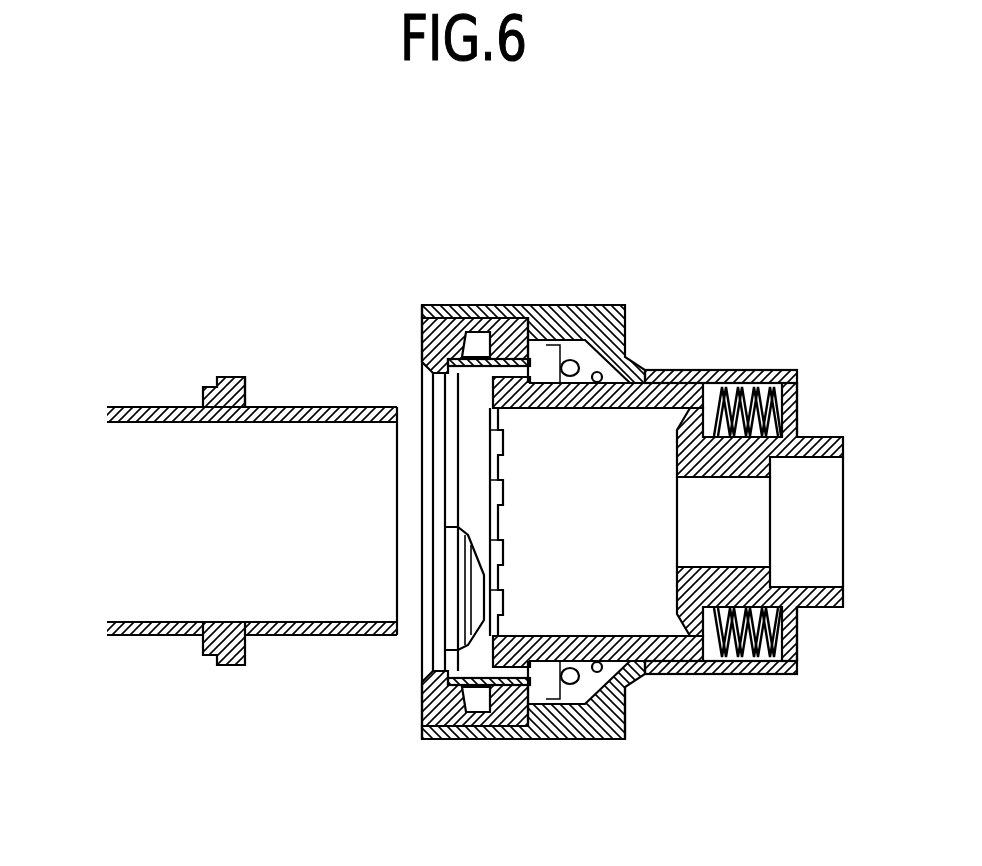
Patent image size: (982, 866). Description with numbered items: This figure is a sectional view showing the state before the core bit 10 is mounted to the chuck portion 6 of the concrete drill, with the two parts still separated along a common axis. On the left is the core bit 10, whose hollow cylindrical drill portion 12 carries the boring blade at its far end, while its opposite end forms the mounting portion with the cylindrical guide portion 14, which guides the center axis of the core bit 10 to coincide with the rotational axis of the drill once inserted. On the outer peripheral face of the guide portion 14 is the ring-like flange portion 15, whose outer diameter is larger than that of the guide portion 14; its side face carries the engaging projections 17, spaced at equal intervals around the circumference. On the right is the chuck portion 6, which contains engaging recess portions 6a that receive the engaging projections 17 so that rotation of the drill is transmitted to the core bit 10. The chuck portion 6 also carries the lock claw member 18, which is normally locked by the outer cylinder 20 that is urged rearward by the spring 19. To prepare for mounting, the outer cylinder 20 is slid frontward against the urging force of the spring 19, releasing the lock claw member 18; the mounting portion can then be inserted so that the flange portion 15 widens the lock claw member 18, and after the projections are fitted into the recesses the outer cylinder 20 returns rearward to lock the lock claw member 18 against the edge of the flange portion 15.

The core bit 10 is at (229, 483).
The drill portion 12 is at (157, 635).
The guide portion 14 is at (328, 635).
The flange portion 15 is at (227, 377).
The engaging projection 17 is at (247, 390).
The chuck portion 6 is at (625, 510).
The engaging recess portion 6a is at (568, 740).
The lock claw member 18 is at (477, 357).
The spring 19 is at (745, 372).
The outer cylinder 20 is at (625, 720).